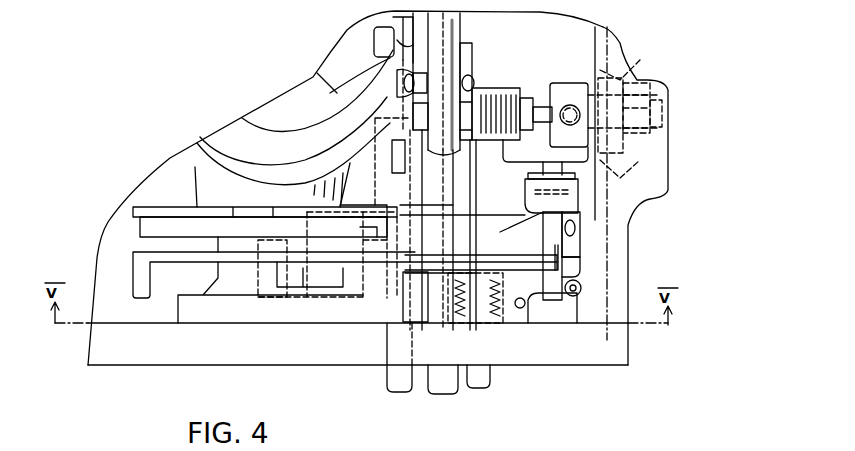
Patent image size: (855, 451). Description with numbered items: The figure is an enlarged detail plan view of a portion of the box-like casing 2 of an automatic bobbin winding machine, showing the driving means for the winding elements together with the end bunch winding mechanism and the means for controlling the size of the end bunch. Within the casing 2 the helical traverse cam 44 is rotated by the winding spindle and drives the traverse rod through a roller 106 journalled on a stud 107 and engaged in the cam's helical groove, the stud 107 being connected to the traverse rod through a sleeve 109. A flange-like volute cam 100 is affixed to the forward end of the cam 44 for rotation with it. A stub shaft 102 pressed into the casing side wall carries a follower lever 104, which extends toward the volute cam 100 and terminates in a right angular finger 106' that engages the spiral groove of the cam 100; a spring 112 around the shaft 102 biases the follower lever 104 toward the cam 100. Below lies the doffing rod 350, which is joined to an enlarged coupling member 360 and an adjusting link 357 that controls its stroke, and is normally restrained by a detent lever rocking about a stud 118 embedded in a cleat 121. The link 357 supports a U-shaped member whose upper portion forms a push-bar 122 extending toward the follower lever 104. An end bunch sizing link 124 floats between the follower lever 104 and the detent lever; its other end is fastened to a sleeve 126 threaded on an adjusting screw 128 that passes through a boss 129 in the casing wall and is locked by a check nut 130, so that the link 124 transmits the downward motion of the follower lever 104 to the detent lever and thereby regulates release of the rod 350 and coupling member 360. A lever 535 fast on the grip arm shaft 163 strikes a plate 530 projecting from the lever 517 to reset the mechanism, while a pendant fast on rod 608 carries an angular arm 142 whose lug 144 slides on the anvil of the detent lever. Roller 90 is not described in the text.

The casing 2 is at (680, 150).
The helical cam 44 is at (315, 112).
The roller 90 is at (582, 286).
The volute cam 100 is at (150, 210).
The stub shaft 102 is at (475, 378).
The follower lever 104 is at (283, 300).
The roller 106 is at (361, 73).
The right angular finger 106' is at (236, 321).
The stud 107 is at (467, 57).
The sleeve 109 is at (468, 75).
The spring 112 is at (497, 315).
The stud 118 is at (575, 228).
The cleat 121 is at (560, 243).
The push-bar 122 is at (448, 196).
The end bunch sizing link 124 is at (473, 163).
The sleeve 126 is at (497, 90).
The adjusting screw 128 is at (670, 92).
The boss 129 is at (622, 80).
The check nut 130 is at (650, 78).
The angular arm 142 is at (480, 225).
The lug 144 is at (348, 275).
The grip arm shaft 163 is at (435, 385).
The rod 350 is at (392, 377).
The adjusting link 357 is at (408, 158).
The coupling member 360 is at (383, 172).
The lever 517 is at (175, 258).
The plate or lug 530 is at (312, 288).
The lever 535 is at (528, 278).
The rod 608 is at (578, 250).